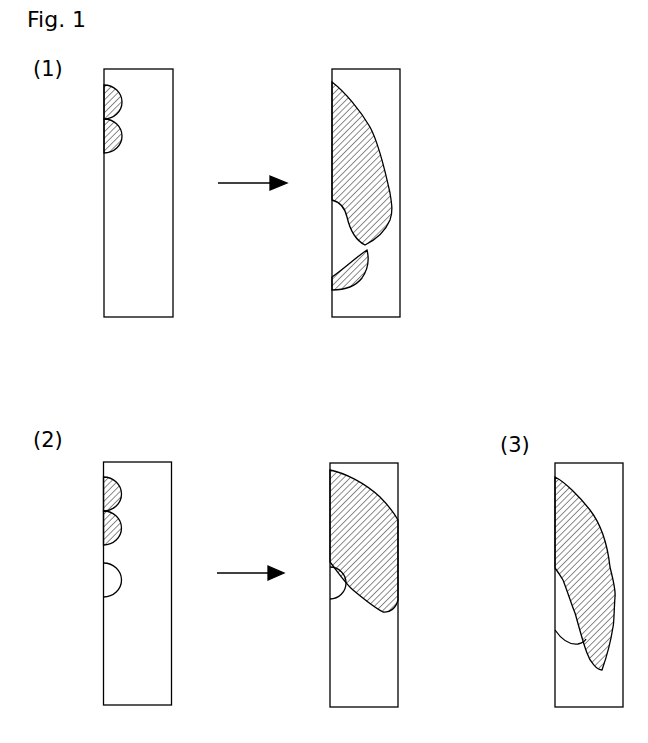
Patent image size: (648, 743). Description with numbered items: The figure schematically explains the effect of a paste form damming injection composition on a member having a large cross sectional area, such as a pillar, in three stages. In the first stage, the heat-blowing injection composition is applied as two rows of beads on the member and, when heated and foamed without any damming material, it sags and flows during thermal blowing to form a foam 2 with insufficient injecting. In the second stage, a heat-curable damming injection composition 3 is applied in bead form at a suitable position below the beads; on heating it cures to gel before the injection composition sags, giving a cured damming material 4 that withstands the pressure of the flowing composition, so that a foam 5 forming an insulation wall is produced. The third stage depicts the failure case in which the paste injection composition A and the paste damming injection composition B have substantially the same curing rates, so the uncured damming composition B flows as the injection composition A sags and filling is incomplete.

The foam 2 is at (348, 156).
The damming injection composition 3 is at (108, 583).
The cured damming material 4 is at (335, 585).
The foam 5 is at (347, 528).
The paste injection composition A is at (565, 530).
The paste damming injection composition B is at (563, 610).